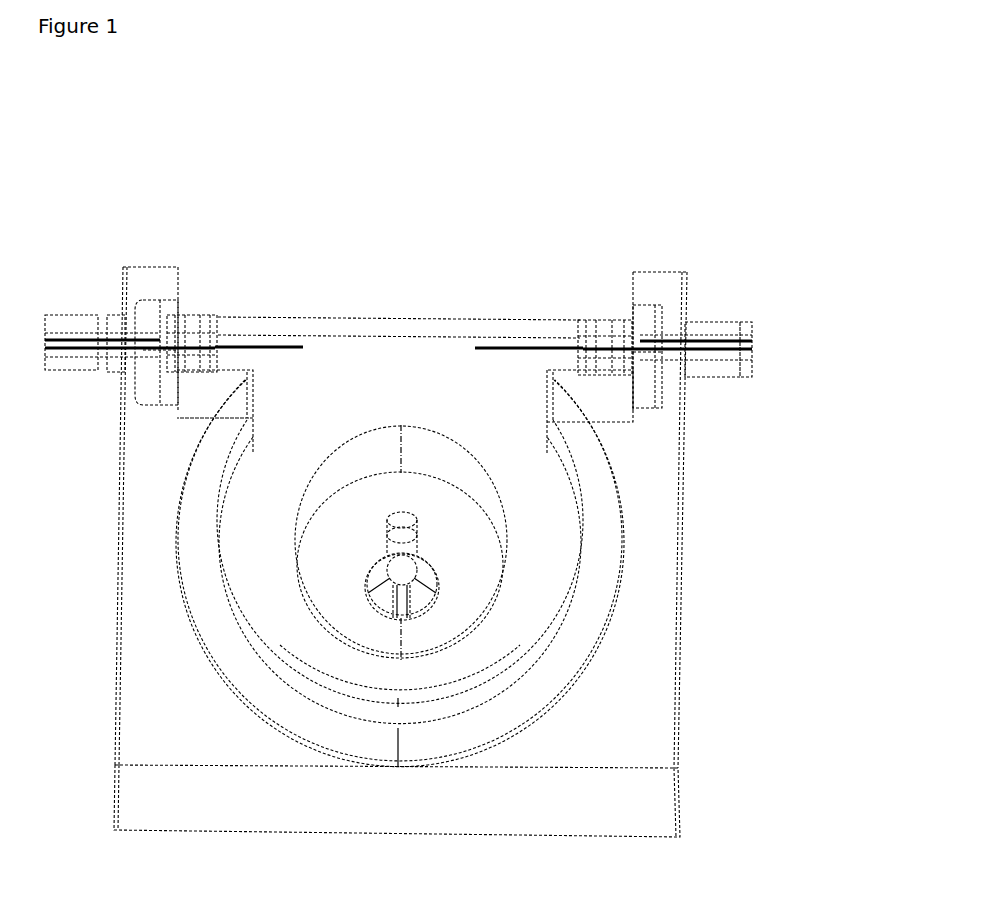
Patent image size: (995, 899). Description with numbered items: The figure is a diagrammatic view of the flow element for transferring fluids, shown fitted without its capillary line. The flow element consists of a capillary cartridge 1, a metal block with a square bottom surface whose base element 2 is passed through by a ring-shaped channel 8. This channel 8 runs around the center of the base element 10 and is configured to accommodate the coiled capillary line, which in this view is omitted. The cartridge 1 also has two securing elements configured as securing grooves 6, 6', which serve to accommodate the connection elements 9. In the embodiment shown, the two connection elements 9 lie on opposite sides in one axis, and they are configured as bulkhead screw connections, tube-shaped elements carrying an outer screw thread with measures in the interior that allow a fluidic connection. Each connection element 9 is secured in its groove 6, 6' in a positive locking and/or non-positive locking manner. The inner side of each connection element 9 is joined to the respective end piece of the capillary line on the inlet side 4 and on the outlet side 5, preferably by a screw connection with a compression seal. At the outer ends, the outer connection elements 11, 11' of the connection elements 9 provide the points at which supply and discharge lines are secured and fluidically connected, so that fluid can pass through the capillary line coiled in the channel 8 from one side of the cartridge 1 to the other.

The capillary cartridge 1 is at (660, 548).
The base element 2 is at (638, 672).
The end piece of the capillary line on inlet side 4 is at (265, 345).
The end piece of the capillary line on outlet side 5 is at (530, 336).
The securing groove 6 is at (122, 288).
The securing groove 6' is at (720, 324).
The ring-shaped channel 8 is at (258, 505).
The connection element 9 is at (194, 330).
The center of the base element 10 is at (385, 535).
The outer connection element of the connection element 11 is at (109, 304).
The outer connection element of the connection element 11' is at (744, 320).